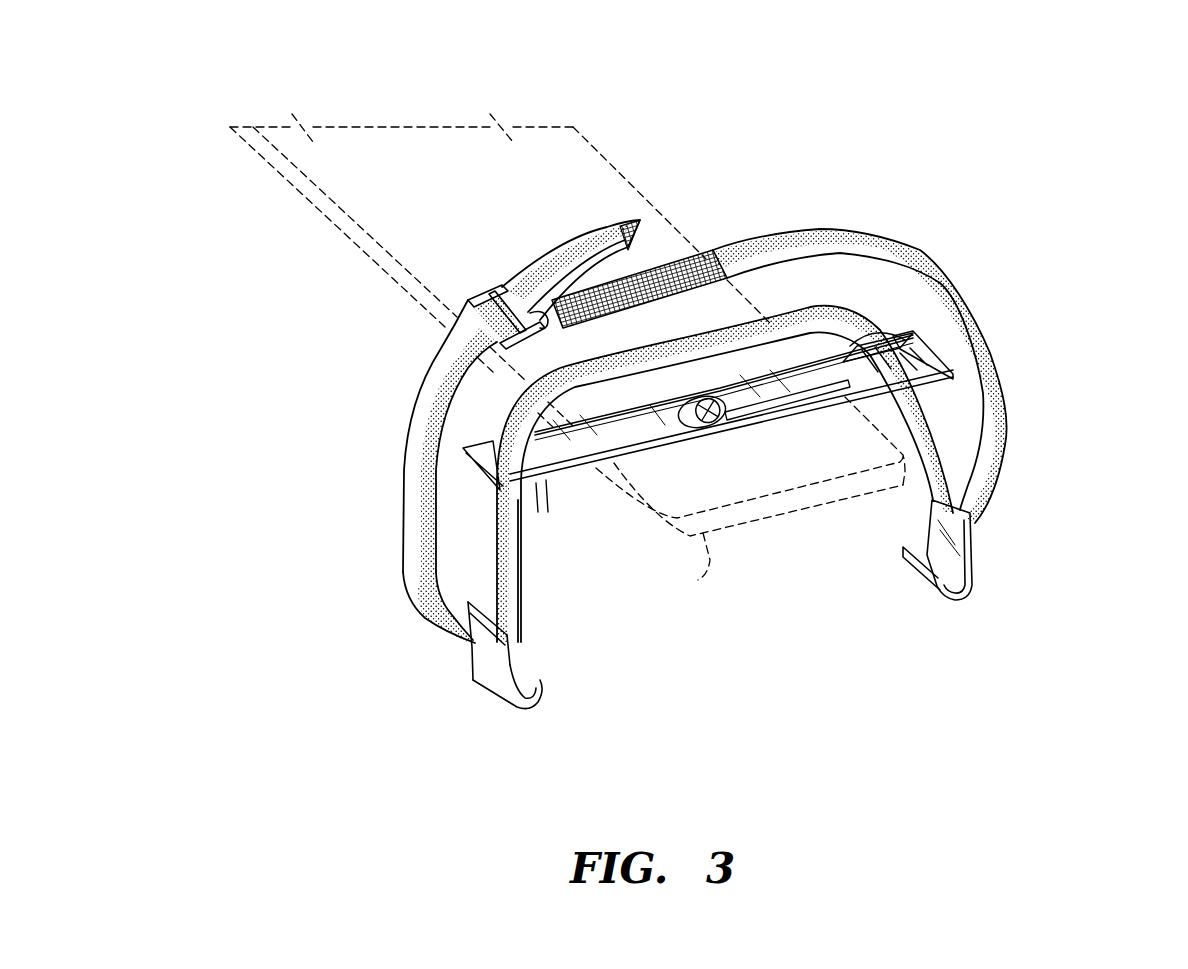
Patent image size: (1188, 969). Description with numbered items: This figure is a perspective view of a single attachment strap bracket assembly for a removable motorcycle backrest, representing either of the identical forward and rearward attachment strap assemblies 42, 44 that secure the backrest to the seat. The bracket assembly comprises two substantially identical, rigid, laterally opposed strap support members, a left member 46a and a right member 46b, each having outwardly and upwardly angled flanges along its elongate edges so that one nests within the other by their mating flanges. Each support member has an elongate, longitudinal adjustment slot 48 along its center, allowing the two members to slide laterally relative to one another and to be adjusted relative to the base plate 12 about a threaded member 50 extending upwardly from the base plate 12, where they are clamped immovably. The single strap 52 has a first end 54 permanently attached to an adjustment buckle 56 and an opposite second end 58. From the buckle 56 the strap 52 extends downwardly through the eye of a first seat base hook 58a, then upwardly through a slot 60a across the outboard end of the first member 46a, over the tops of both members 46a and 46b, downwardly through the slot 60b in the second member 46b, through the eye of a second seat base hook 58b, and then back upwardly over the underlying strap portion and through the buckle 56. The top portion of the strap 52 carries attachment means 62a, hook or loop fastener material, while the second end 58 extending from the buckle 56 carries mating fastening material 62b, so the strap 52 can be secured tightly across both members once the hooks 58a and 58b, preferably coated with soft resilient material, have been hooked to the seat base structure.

The base plate 12 is at (567, 364).
The forward attachment strap assembly 42 is at (1000, 103).
The rearward attachment strap assembly 44 is at (677, 449).
The left strap support member 46a is at (540, 480).
The right strap support member 46b is at (927, 373).
The adjustment slot 48 is at (800, 393).
The threaded member 50 is at (695, 427).
The strap 52 is at (779, 345).
The first end 54 is at (430, 363).
The adjustment buckle 56 is at (483, 293).
The second end 58 is at (615, 236).
The first seat base hook 58a is at (483, 680).
The second seat base hook 58b is at (928, 587).
The slot 60a is at (487, 457).
The slot 60b is at (927, 357).
The attachment means 62a is at (698, 257).
The mating fastening material 62b is at (652, 234).